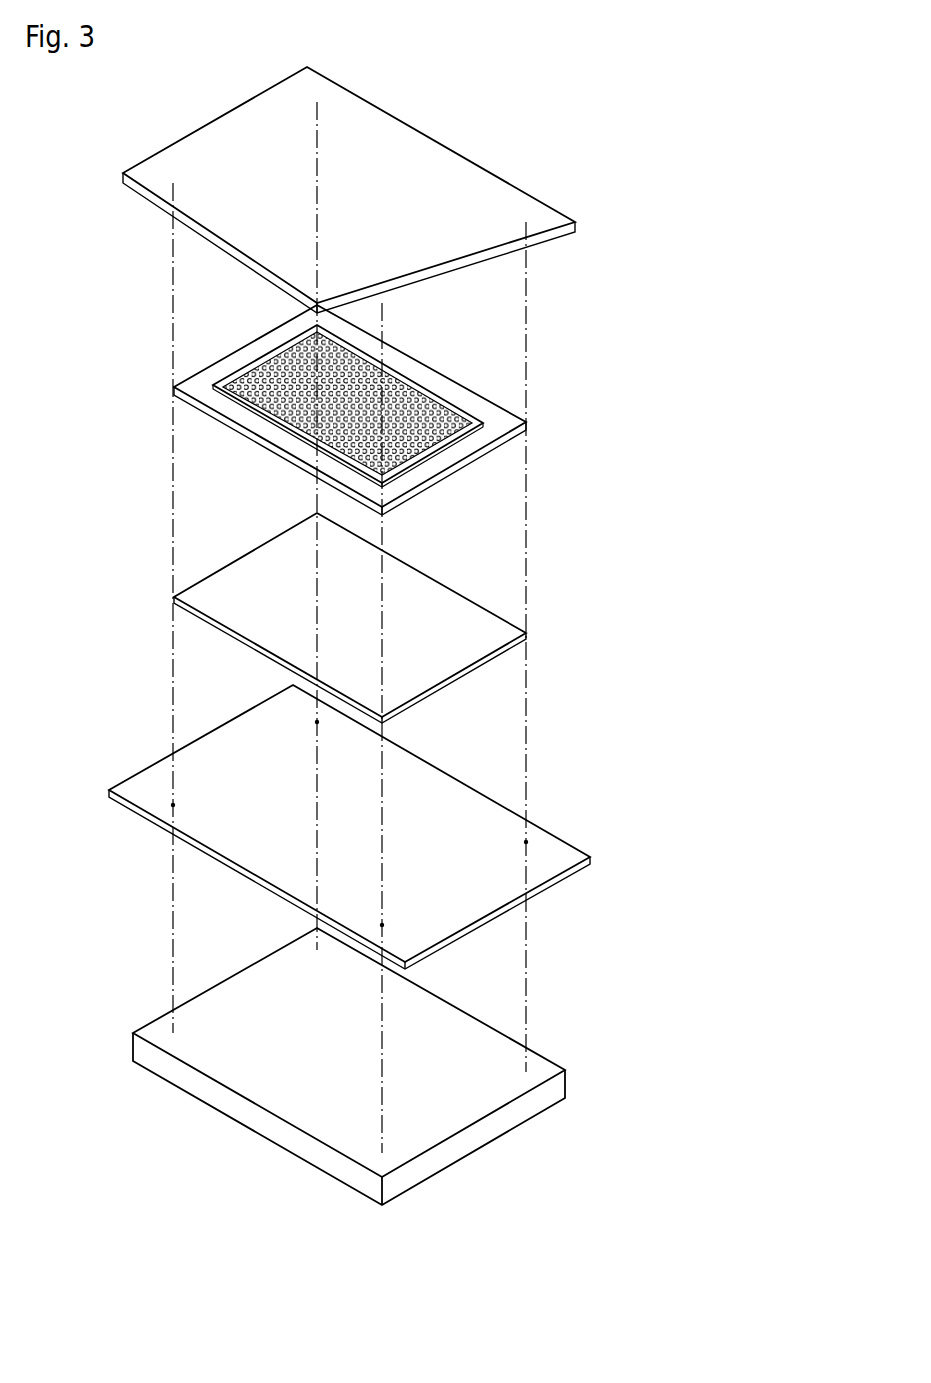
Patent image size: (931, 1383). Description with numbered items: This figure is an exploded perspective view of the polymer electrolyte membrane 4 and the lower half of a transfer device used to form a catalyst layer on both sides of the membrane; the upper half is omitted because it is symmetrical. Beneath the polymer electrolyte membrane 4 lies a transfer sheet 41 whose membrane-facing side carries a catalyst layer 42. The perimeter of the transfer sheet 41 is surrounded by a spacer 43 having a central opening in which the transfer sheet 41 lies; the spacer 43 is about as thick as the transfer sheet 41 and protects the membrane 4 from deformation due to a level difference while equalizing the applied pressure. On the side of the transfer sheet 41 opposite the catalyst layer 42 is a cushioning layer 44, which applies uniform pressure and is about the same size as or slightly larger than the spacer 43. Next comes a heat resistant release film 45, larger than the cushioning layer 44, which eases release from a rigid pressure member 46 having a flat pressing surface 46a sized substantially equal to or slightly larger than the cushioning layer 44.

The polymer electrolyte membrane 4 is at (455, 220).
The transfer sheet 41 is at (267, 400).
The catalyst layer 42 is at (240, 399).
The spacer 43 is at (253, 350).
The cushioning layer 44 is at (415, 630).
The heat resistant release film 45 is at (423, 832).
The pressure member 46 is at (304, 1050).
The pressing surface 46a is at (293, 1037).